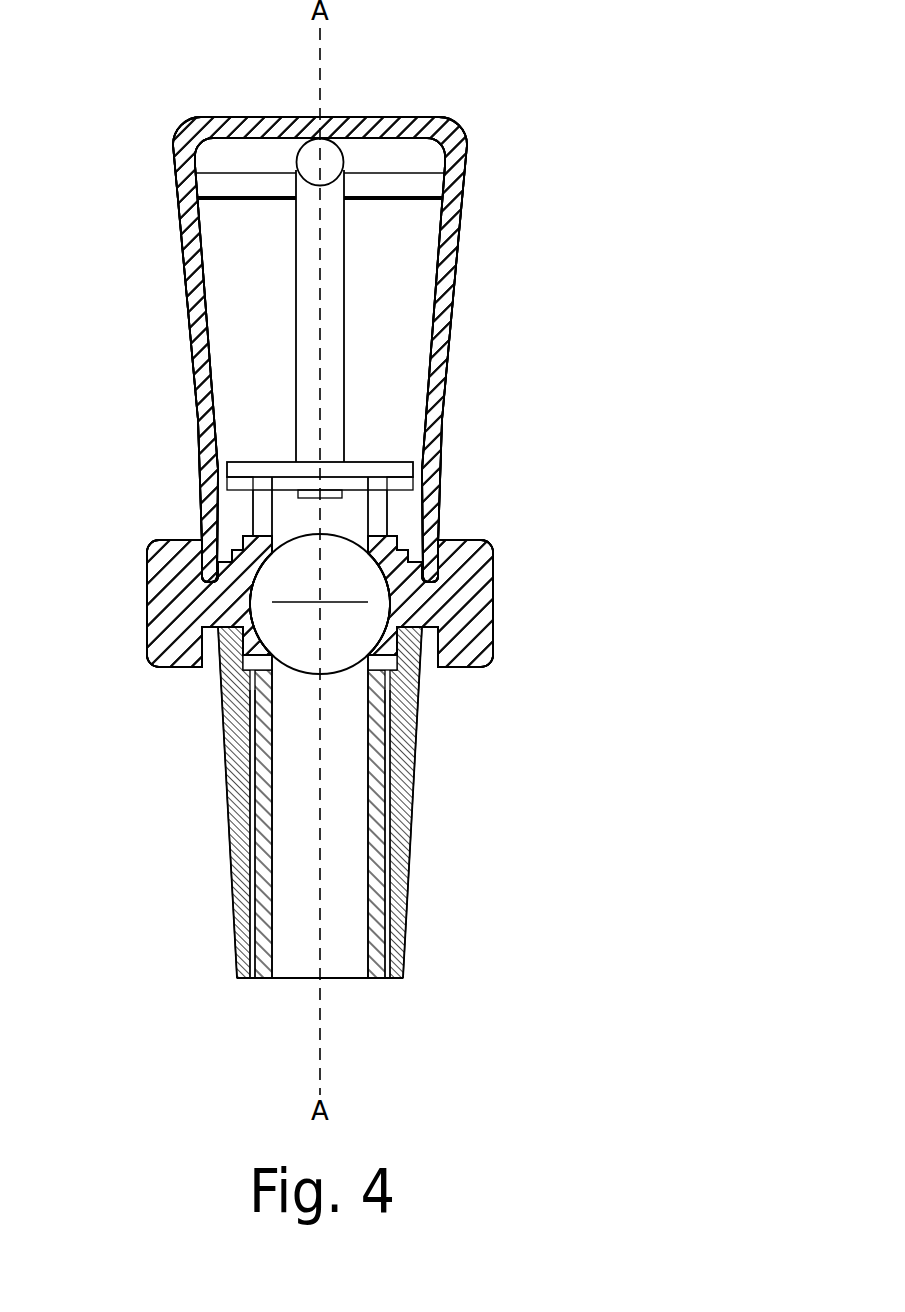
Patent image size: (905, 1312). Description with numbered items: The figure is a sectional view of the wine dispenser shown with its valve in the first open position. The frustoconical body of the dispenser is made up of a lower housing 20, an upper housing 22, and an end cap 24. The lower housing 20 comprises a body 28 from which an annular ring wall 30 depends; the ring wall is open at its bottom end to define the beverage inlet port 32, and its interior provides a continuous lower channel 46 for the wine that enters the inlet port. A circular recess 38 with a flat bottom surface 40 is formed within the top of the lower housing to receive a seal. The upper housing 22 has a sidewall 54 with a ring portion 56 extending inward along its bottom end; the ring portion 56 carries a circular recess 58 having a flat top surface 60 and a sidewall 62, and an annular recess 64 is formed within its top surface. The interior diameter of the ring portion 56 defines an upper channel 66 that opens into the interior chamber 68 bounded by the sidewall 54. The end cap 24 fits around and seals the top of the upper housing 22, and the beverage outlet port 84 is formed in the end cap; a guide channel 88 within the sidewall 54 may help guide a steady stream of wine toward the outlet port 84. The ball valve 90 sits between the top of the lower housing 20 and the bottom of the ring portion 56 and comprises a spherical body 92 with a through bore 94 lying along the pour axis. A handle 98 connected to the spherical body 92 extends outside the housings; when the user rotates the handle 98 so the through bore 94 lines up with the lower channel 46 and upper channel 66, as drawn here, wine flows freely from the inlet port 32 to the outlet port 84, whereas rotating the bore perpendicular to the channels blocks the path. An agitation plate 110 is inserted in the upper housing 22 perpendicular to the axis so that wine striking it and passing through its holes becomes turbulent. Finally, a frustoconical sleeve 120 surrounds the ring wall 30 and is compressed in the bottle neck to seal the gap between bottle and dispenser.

The lower housing 20 is at (382, 845).
The upper housing 22 is at (470, 232).
The end cap 24 is at (233, 117).
The body 28 is at (397, 690).
The annular ring wall 30 is at (262, 832).
The beverage inlet port 32 is at (292, 980).
The circular recess 38 is at (243, 665).
The flat bottom surface 40 is at (243, 700).
The lower channel 46 is at (281, 822).
The sidewall 54 is at (190, 318).
The ring portion 56 is at (222, 498).
The circular recess 58 is at (260, 550).
The flat top surface 60 is at (253, 530).
The sidewall 62 is at (242, 547).
The annular recess 64 is at (222, 463).
The upper channel 66 is at (281, 529).
The interior chamber 68 is at (231, 259).
The beverage outlet port 84 is at (327, 157).
The guide channel 88 is at (333, 290).
The ball valve 90 is at (290, 638).
The spherical body 92 is at (380, 597).
The through bore 94 is at (281, 582).
The handle 98 is at (158, 595).
The agitation plate 110 is at (353, 468).
The frustoconical sleeve 120 is at (240, 922).